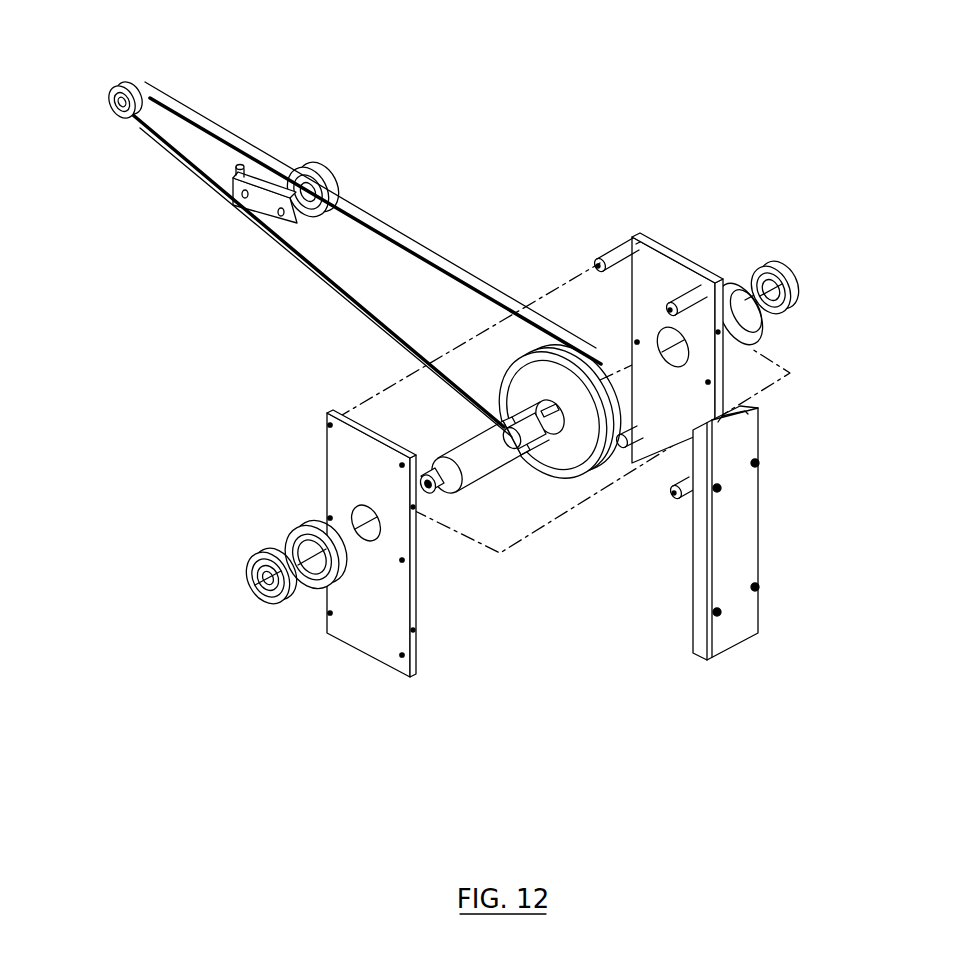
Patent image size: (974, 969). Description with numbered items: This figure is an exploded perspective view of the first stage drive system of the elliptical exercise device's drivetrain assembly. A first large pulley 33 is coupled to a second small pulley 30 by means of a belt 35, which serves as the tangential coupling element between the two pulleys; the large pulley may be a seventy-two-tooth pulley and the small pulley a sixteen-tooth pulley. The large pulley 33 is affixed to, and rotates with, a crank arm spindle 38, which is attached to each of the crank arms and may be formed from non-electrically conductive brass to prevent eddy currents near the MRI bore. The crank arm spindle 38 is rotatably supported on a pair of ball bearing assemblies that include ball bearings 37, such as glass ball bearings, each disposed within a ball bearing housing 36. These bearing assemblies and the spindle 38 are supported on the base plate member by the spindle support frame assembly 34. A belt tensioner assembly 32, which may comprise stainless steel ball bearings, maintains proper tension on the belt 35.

The second small pulley 30 is at (198, 77).
The belt tensioner assembly 32 is at (372, 127).
The first large pulley 33 is at (564, 264).
The spindle support frame assembly 34 is at (531, 396).
The belt 35 is at (363, 259).
The ball bearing housing 36 is at (374, 645).
The ball bearings 37 is at (291, 660).
The crank arm spindle 38 is at (529, 591).